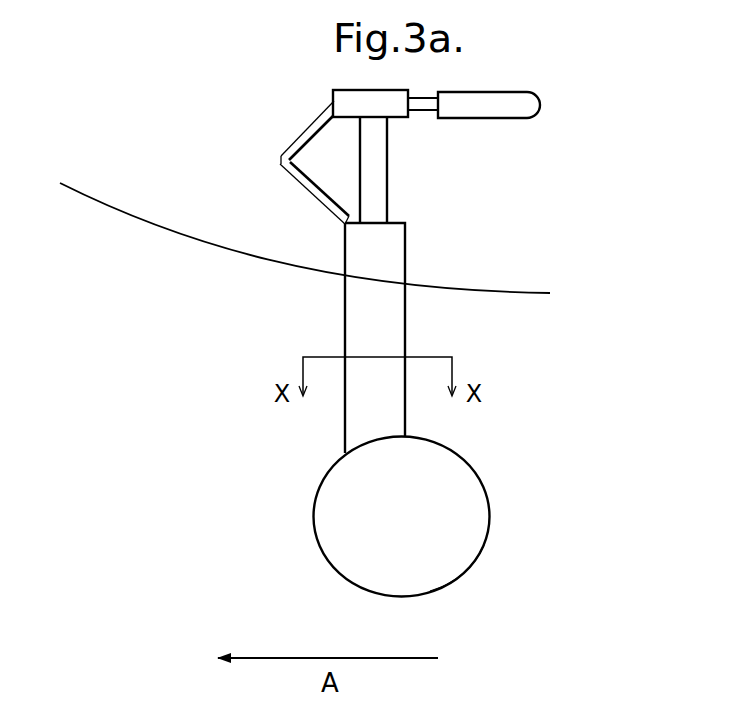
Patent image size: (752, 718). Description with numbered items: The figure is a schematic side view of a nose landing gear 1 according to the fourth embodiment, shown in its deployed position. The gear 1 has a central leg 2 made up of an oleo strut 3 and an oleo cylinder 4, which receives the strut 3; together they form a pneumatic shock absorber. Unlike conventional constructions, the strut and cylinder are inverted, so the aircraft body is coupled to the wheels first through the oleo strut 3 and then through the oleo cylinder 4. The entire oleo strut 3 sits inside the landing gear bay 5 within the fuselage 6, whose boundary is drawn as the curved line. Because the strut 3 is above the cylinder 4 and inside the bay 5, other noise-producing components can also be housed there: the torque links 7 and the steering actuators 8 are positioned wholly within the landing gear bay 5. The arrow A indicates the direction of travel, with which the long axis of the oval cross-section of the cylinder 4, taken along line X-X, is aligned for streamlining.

The nose landing gear 1 is at (112, 285).
The central leg 2 is at (345, 323).
The oleo strut 3 is at (392, 176).
The oleo cylinder 4 is at (410, 338).
The landing gear bay 5 is at (231, 220).
The fuselage 6 is at (223, 285).
The torque links 7 is at (275, 143).
The steering actuators 8 is at (548, 102).